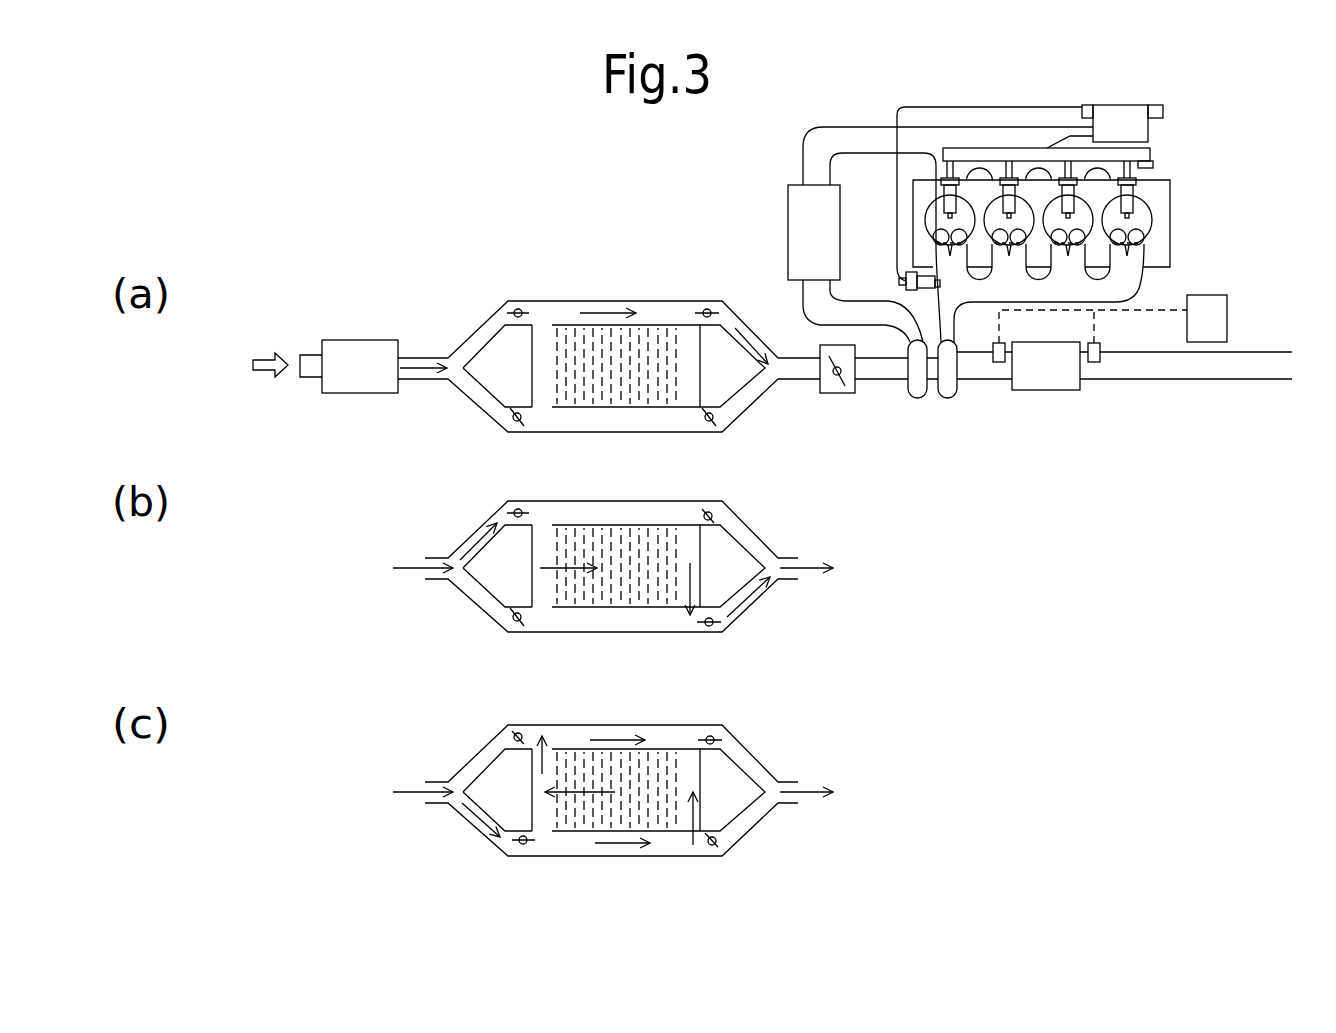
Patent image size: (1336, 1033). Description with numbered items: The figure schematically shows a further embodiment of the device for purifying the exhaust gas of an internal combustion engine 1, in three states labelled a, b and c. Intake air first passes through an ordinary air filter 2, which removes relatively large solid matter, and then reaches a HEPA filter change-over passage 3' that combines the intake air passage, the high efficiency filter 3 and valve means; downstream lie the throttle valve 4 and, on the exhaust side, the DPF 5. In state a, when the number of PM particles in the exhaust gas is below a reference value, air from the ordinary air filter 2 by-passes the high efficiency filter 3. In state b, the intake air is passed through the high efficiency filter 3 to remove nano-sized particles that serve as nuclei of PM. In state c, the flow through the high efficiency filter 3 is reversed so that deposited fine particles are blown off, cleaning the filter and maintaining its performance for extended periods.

The internal combustion engine 1 is at (1172, 210).
The ordinary air filter 2 is at (361, 340).
The high efficiency filter 3 is at (608, 535).
The passage for changing over the high efficiency filter 3' is at (613, 549).
The throttle valve 4 is at (838, 393).
The DPF 5 is at (1041, 390).